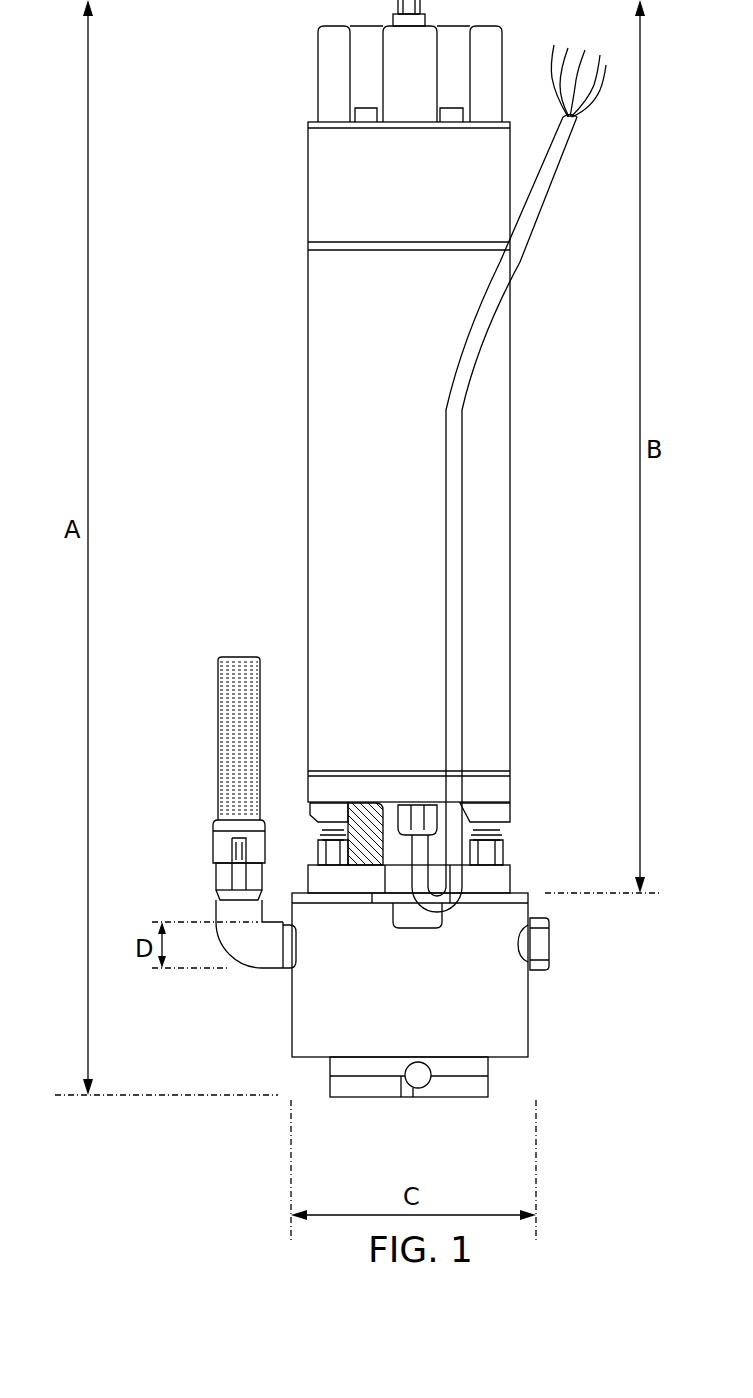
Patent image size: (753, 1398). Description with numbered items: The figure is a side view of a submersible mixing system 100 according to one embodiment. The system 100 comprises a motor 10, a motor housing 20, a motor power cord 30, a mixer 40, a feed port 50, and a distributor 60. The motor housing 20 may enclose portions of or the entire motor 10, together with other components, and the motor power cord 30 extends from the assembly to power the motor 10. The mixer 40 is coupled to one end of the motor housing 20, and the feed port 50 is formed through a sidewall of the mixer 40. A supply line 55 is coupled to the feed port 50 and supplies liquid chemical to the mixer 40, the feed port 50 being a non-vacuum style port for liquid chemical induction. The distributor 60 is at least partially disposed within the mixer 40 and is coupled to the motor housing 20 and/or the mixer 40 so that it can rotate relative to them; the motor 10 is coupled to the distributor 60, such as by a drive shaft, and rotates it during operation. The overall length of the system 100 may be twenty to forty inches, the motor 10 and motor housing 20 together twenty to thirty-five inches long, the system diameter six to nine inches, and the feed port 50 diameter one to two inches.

The submersible mixing system 100 is at (268, 328).
The motor 10 is at (318, 72).
The motor housing 20 is at (308, 488).
The motor power cord 30 is at (575, 190).
The mixer 40 is at (540, 990).
The feed port 50 is at (283, 945).
The supply line 55 is at (218, 723).
The distributor 60 is at (407, 1110).